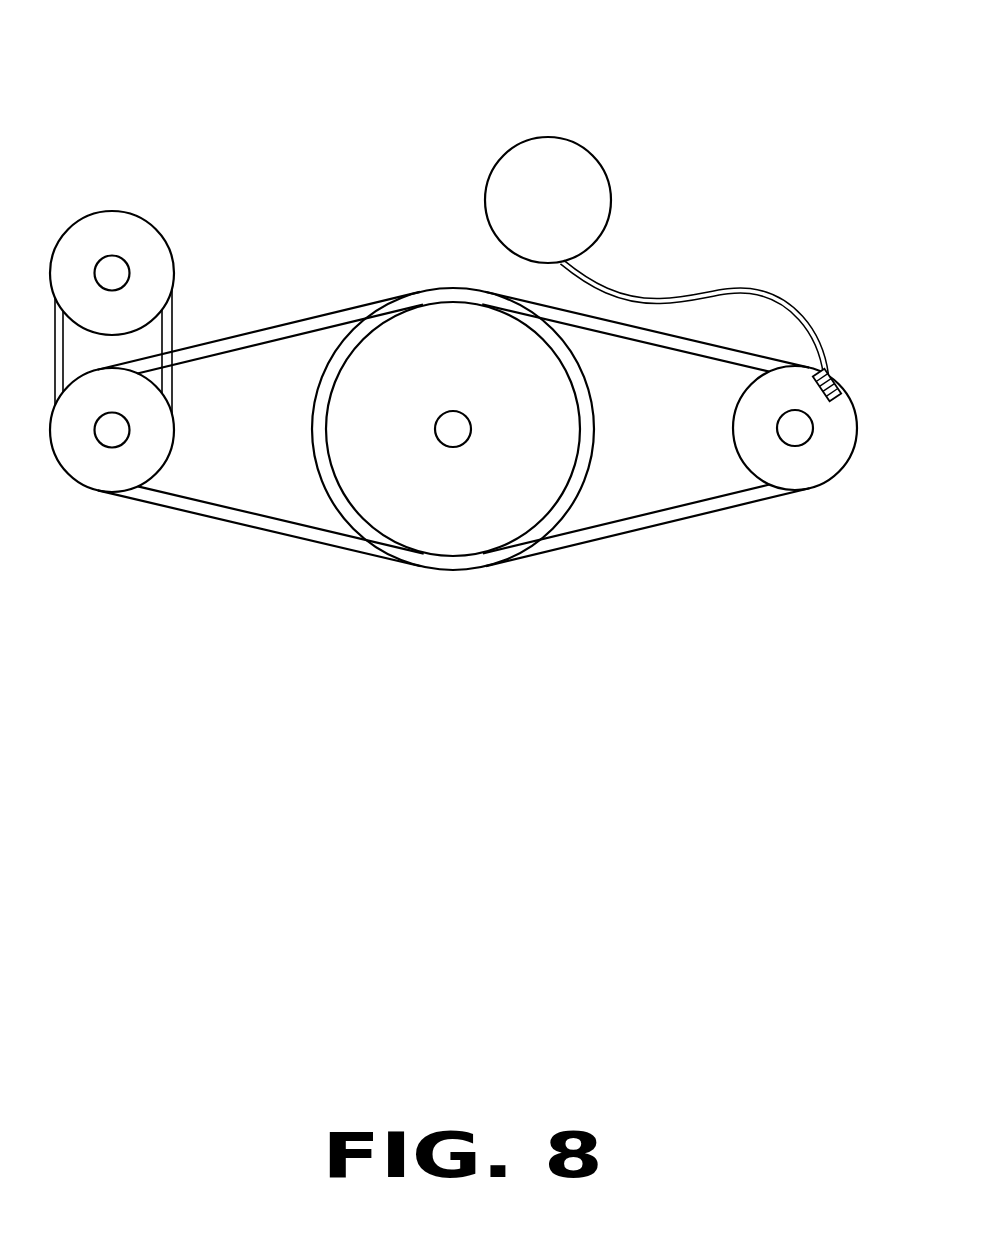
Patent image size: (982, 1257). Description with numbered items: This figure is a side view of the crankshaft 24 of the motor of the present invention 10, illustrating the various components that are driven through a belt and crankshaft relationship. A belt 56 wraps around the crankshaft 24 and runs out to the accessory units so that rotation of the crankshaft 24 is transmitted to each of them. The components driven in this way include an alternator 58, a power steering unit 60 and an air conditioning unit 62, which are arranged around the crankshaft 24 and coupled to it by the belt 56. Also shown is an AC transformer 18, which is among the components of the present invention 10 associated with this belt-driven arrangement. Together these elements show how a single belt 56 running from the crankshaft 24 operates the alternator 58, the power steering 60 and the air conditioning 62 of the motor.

The present invention 10 is at (766, 121).
The AC transformer 18 is at (543, 152).
The crankshaft 24 is at (440, 340).
The belt 56 is at (342, 538).
The alternator 58 is at (817, 468).
The power steering 60 is at (123, 232).
The air conditioning 62 is at (97, 472).